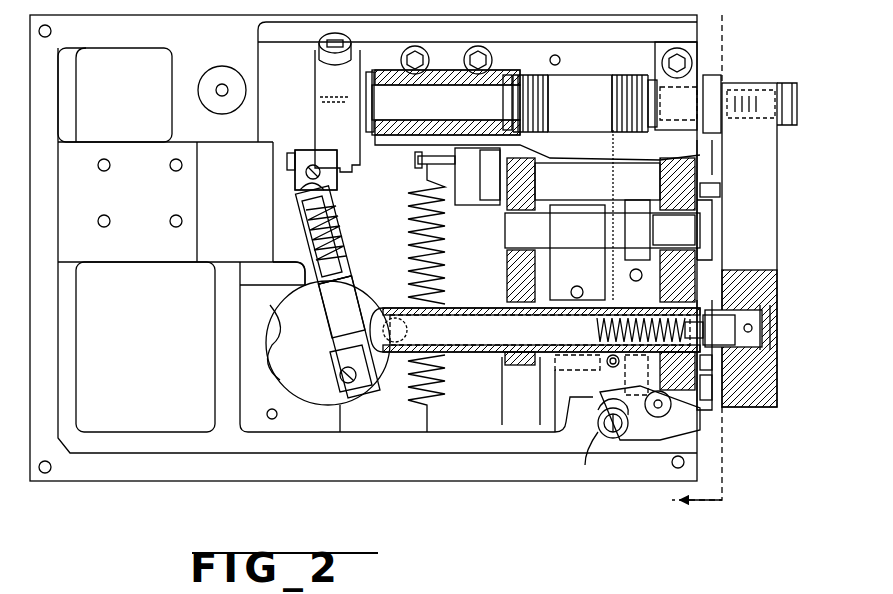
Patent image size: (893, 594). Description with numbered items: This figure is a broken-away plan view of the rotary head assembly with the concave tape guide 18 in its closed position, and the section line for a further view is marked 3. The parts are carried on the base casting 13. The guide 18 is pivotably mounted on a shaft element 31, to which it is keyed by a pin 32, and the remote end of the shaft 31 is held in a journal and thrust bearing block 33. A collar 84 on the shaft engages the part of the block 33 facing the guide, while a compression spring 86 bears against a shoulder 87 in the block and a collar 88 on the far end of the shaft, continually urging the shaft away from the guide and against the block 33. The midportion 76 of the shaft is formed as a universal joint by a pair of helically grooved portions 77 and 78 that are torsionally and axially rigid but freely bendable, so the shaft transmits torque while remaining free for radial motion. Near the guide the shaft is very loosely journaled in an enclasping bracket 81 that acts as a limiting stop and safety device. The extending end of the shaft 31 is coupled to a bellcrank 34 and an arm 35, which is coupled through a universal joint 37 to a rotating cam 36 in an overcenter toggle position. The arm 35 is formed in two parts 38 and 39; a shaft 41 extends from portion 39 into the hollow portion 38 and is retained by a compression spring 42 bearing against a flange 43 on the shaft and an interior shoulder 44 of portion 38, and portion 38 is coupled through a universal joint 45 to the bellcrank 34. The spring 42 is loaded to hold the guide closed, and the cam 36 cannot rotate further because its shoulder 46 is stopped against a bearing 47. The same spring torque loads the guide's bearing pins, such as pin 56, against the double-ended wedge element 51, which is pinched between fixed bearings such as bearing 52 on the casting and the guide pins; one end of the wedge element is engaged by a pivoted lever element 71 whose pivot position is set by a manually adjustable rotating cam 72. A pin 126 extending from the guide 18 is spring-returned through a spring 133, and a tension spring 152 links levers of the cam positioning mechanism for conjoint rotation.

The base casting 13 is at (124, 476).
The concave tape guide 18 is at (734, 257).
The shaft element 31 is at (703, 101).
The pin 32 is at (725, 130).
The journal and thrust bearing block 33 is at (456, 52).
The bellcrank 34 is at (313, 128).
The arm 35 is at (346, 188).
The rotating cam 36 is at (288, 385).
The universal joint 37 is at (330, 385).
The arm portion 38 is at (340, 232).
The arm portion 39 is at (348, 284).
The shaft 41 is at (328, 292).
The compression spring 42 is at (336, 213).
The flange 43 is at (310, 200).
The interior shoulder 44 is at (305, 273).
The universal joint 45 is at (290, 192).
The shoulder 46 is at (378, 333).
The bearing 47 is at (383, 326).
The double-ended wedge element 51 is at (714, 402).
The fixed bearing 52 is at (714, 380).
The bearing pin 56 is at (716, 362).
The pivoted lever element 71 is at (652, 438).
The rotating cam 72 is at (599, 440).
The midportion 76 is at (580, 70).
The helically grooved portion 77 is at (540, 70).
The helically grooved portion 78 is at (630, 70).
The enclasping bracket 81 is at (665, 125).
The collar 84 is at (508, 73).
The compression spring 86 is at (405, 70).
The shoulder 87 is at (452, 70).
The collar 88 is at (372, 86).
The pin 126 is at (715, 192).
The spring 133 is at (447, 273).
The tension spring 152 is at (606, 186).
The section line 3- 3 is at (701, 516).